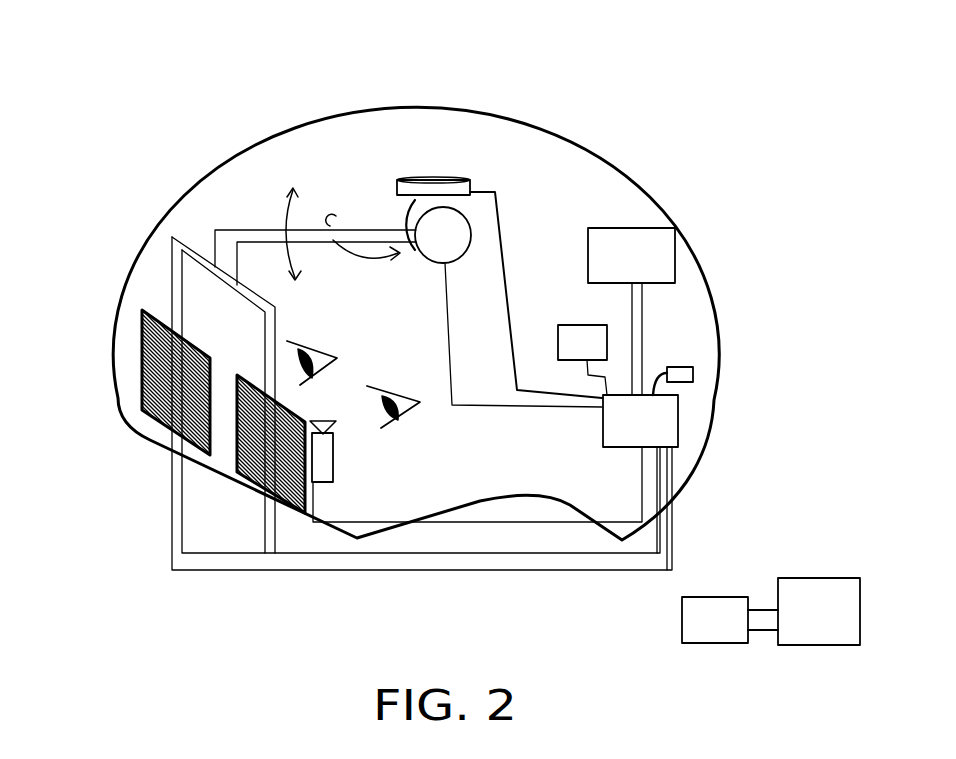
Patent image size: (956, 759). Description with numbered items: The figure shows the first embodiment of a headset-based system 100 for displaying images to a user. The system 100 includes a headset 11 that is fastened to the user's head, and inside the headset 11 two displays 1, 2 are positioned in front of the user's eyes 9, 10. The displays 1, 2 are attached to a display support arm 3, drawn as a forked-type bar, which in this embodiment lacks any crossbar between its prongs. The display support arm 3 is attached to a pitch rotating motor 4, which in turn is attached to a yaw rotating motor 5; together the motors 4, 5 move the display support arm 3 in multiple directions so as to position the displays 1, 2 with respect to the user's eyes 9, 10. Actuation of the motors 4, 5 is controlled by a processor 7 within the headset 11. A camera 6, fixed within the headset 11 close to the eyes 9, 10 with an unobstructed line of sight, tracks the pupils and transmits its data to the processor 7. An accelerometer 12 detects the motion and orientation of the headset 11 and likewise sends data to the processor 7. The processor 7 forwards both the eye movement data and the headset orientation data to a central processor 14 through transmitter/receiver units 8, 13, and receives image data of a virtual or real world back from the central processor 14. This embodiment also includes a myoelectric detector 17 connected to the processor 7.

The system 100 is at (485, 93).
The headset 11 is at (237, 148).
The display support arm 3 is at (223, 247).
The display 1 is at (167, 380).
The display 2 is at (250, 437).
The pitch rotating motor 4 is at (450, 232).
The yaw rotating motor 5 is at (420, 193).
The camera 6 is at (334, 467).
The processor 7 is at (653, 415).
The transmitter/receiver unit 8 is at (623, 243).
The user's eye 9 is at (290, 343).
The user's eye 10 is at (407, 413).
The accelerometer 12 is at (600, 335).
The transmitter/receiver unit 13 is at (685, 620).
The central processor 14 is at (780, 582).
The myoelectric detector 17 is at (693, 373).